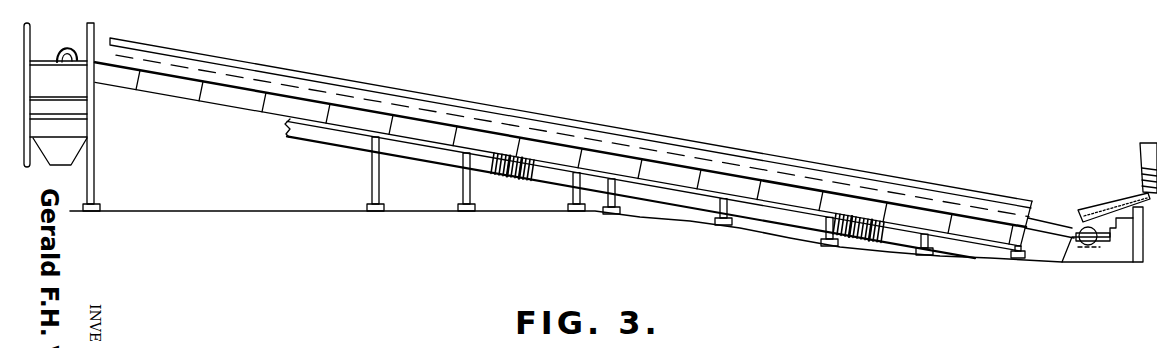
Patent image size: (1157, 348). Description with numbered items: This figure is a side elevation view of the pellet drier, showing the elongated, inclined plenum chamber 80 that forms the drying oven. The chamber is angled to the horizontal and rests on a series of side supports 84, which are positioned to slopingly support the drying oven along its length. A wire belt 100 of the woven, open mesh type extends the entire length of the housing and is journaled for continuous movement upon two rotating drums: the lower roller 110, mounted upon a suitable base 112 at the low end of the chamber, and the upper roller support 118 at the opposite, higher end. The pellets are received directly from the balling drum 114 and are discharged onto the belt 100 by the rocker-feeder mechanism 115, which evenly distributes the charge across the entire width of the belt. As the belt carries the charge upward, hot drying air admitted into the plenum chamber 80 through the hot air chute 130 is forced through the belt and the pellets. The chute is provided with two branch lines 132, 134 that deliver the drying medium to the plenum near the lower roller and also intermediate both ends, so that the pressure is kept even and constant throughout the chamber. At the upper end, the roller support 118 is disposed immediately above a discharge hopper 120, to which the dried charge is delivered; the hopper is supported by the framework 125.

The plenum chamber 80 is at (533, 153).
The side supports 84 is at (231, 161).
The wire belt 100 is at (753, 167).
The lower roller 110 is at (1078, 228).
The base 112 is at (1100, 253).
The balling drum 114 is at (1146, 147).
The rocker-feeder mechanism 115 is at (1099, 211).
The roller support 118 is at (76, 46).
The discharge hopper 120 is at (70, 151).
The framework 125 is at (96, 110).
The hot air chute 130 is at (324, 138).
The branch line 132 is at (551, 173).
The branch line 134 is at (898, 233).